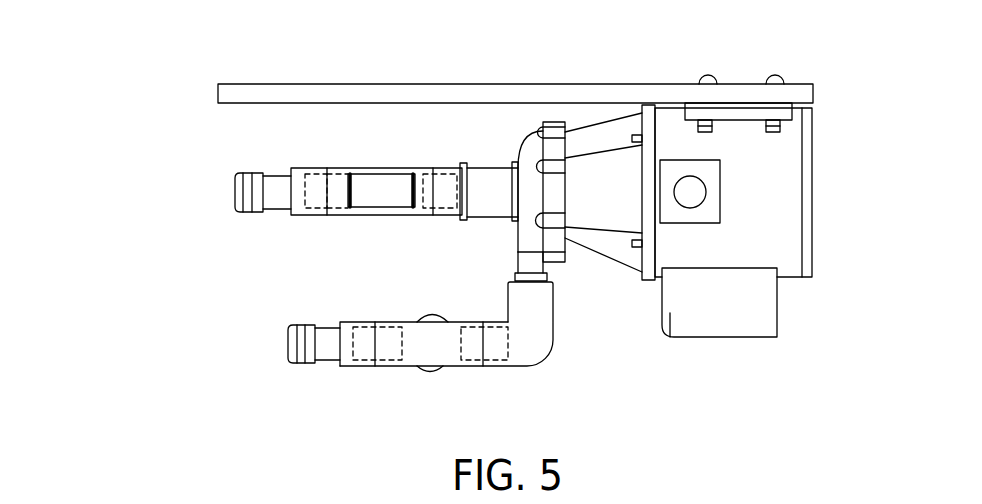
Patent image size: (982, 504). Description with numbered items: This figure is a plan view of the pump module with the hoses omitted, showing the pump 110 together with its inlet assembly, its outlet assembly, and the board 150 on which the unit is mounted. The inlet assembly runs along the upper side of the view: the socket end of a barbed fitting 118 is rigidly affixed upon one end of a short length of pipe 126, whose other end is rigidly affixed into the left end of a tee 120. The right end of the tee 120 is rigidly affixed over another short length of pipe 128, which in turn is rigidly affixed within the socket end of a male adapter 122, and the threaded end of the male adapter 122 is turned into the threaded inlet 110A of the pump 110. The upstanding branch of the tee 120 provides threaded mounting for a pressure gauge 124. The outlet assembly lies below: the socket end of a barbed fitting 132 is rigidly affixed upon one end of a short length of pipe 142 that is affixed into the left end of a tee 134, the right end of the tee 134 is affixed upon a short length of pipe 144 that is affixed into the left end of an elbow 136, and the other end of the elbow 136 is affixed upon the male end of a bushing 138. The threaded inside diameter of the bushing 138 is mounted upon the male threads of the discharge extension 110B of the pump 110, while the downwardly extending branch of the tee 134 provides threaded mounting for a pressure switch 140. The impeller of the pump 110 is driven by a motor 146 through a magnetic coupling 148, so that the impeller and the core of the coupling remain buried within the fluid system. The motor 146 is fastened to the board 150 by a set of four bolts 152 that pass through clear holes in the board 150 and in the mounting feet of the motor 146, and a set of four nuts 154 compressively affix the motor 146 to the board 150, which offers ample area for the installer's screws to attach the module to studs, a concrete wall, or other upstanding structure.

The pump 110 is at (530, 145).
The threaded inlet 110A is at (492, 207).
The discharge extension 110B is at (547, 276).
The barbed fitting 118 is at (235, 186).
The tee 120 is at (358, 215).
The male adapter 122 is at (447, 168).
The pressure gauge 124 is at (383, 197).
The pipe 126 is at (323, 171).
The pipe 128 is at (423, 208).
The barbed fitting 132 is at (288, 345).
The tee 134 is at (452, 352).
The elbow 136 is at (545, 364).
The bushing 138 is at (553, 284).
The pressure switch 140 is at (432, 373).
The pipe 142 is at (363, 360).
The pipe 144 is at (467, 323).
The motor 146 is at (782, 220).
The magnetic coupling 148 is at (622, 211).
The board 150 is at (595, 92).
The bolts 152 is at (777, 77).
The nuts 154 is at (785, 132).